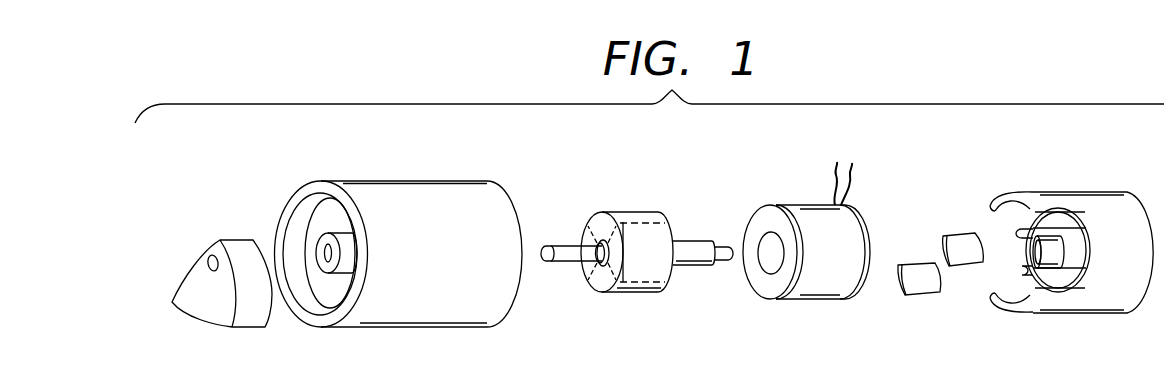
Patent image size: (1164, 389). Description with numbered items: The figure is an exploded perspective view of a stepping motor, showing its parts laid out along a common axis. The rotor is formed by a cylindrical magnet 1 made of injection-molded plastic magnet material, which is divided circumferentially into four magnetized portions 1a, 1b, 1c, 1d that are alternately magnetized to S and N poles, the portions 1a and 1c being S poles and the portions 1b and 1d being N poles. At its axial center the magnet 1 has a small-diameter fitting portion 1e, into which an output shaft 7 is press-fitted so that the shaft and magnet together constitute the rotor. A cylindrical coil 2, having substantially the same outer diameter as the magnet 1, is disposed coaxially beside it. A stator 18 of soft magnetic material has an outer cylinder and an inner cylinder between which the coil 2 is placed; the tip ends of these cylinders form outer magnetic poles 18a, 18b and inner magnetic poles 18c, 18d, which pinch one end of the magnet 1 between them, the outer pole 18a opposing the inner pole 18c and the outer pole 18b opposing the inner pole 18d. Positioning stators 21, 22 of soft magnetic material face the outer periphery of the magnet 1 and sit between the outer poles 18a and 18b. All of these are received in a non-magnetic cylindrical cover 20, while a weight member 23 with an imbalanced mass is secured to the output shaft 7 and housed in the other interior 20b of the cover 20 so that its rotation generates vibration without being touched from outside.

The cylindrical magnet 1 is at (645, 210).
The magnetized portion 1a is at (628, 218).
The magnetized portion 1b is at (655, 270).
The magnetized portion 1c is at (625, 292).
The magnetized portion 1d is at (582, 242).
The fitting portion 1e is at (592, 288).
The cylindrical coil 2 is at (807, 211).
The output shaft 7 is at (700, 266).
The stator 18 is at (1115, 191).
The outer magnetic pole 18a is at (1007, 193).
The outer magnetic pole 18b is at (1012, 314).
The inner magnetic pole 18c is at (1020, 233).
The inner magnetic pole 18d is at (1020, 270).
The cover 20 is at (421, 182).
The interior 20b is at (302, 213).
The positioning stator 21 is at (953, 233).
The positioning stator 22 is at (920, 288).
The weight member 23 is at (235, 245).